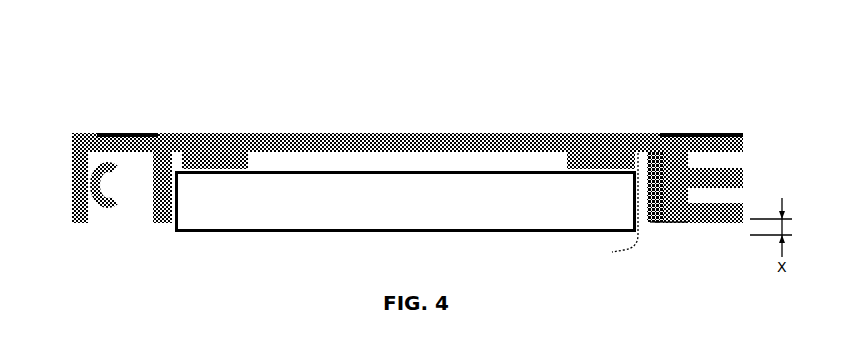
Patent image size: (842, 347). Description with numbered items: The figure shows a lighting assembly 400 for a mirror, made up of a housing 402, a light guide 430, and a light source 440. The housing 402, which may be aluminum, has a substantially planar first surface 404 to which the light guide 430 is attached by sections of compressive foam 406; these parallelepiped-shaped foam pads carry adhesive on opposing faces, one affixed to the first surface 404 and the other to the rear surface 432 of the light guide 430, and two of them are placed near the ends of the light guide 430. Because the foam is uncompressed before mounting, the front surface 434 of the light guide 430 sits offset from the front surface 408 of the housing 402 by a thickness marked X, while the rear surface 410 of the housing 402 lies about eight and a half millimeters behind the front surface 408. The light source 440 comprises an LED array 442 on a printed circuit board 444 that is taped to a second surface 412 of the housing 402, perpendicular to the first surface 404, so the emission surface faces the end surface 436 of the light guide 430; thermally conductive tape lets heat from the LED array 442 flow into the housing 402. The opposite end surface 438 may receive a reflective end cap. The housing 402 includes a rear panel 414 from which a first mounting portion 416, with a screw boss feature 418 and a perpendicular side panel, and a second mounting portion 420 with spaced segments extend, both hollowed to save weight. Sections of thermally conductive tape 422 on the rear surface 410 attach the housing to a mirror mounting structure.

The lighting assembly 400 is at (572, 66).
The housing 402 is at (347, 137).
The first surface 404 is at (298, 152).
The sections of compressive foam 406 is at (226, 160).
The front surface of the housing 408 is at (673, 223).
The rear surface of the housing 410 is at (80, 133).
The second surface 412 is at (661, 223).
The rear panel 414 is at (742, 138).
The first mounting portion 416 is at (126, 231).
The screw boss feature 418 is at (130, 186).
The second mounting portion 420 is at (762, 165).
The sections of thermally conductive tape 422 is at (110, 134).
The light guide 430 is at (487, 178).
The rear surface of the light guide 432 is at (533, 172).
The front surface of the light guide 434 is at (530, 233).
The end surface of the light guide 436 is at (641, 152).
The end surface 438 is at (170, 225).
The light source 440 is at (645, 274).
The LED array 442 is at (611, 209).
The printed circuit board 444 is at (655, 223).